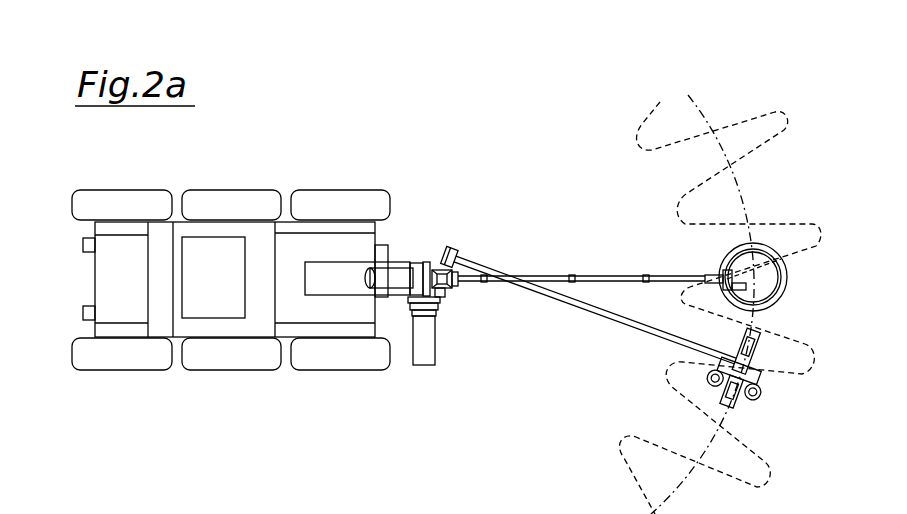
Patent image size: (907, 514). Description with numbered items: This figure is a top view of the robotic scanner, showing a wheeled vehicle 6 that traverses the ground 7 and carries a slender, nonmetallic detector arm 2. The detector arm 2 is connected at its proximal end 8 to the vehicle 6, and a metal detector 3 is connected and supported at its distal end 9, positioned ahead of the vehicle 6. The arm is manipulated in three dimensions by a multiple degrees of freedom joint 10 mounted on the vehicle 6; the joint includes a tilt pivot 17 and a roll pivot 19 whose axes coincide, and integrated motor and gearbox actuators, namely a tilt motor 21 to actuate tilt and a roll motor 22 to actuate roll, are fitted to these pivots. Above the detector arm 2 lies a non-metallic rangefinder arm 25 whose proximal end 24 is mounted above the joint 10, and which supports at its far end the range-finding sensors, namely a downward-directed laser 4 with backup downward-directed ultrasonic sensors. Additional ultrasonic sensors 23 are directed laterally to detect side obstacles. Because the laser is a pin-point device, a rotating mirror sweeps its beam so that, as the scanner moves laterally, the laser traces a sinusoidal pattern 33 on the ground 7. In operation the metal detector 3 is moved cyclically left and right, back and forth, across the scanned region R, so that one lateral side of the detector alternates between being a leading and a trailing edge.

The detector arm 2 is at (590, 276).
The metal detector 3 is at (765, 282).
The laser 4 is at (760, 397).
The wheeled vehicle 6 is at (243, 232).
The ground 7 is at (850, 170).
The proximal end 8 is at (458, 284).
The distal end 9 is at (712, 272).
The multiple degrees of freedom joint 10 is at (478, 243).
The tilt pivot 17 is at (442, 305).
The roll pivot 19 is at (413, 262).
The tilt motor 21 is at (420, 368).
The roll motor 22 is at (397, 280).
The additional ultrasonic sensors 23 is at (889, 506).
The proximal end of the LRF arm 24 is at (455, 257).
The rangefinder arm 25 is at (612, 318).
The sinusoidal pattern 33 is at (738, 122).
The scanned region R is at (686, 93).